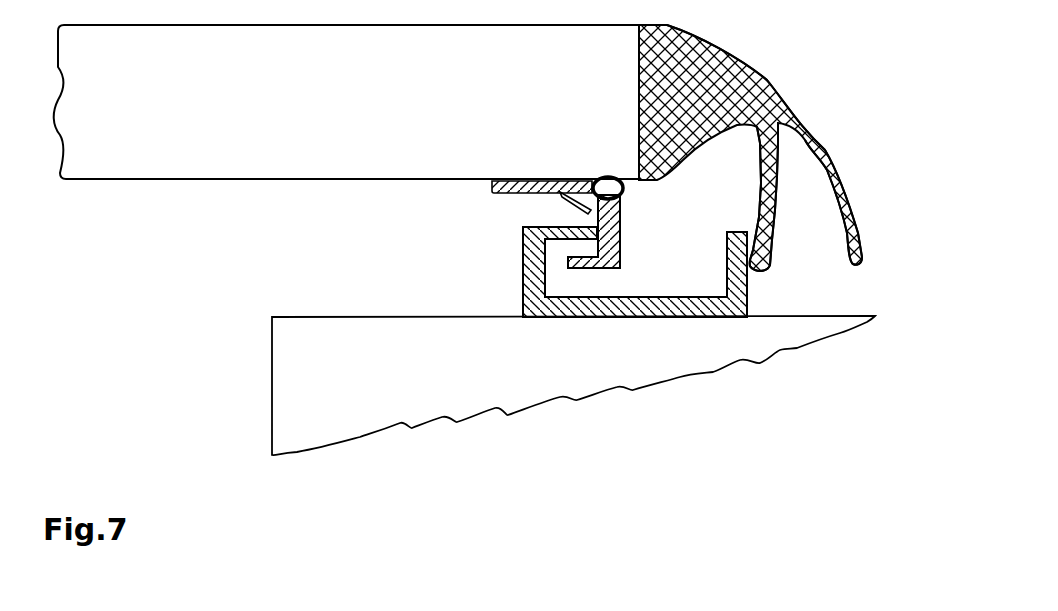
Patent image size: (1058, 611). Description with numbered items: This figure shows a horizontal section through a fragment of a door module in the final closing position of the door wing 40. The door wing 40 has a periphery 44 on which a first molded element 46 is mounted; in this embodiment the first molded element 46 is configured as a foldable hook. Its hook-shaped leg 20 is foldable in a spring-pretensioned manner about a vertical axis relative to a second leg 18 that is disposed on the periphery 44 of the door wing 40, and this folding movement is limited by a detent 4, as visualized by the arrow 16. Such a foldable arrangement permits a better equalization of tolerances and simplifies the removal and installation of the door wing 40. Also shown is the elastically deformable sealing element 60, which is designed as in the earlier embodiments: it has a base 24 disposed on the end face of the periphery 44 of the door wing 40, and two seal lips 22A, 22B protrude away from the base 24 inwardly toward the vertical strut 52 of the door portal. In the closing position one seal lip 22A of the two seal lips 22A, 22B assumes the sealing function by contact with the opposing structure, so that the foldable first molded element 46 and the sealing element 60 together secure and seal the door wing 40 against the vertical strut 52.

The door wing 40 is at (163, 163).
The periphery 44 is at (610, 89).
The base 24 is at (713, 53).
The elastically deformable sealing element 60 is at (777, 92).
The seal lip 22A is at (758, 267).
The seal lip 22B is at (860, 238).
The arrow 16 is at (640, 230).
The first molded element 46 is at (543, 183).
The detent 4 is at (567, 203).
The hook-shaped leg 20 is at (620, 257).
The second leg 18 is at (498, 187).
The vertical strut 52 is at (705, 360).